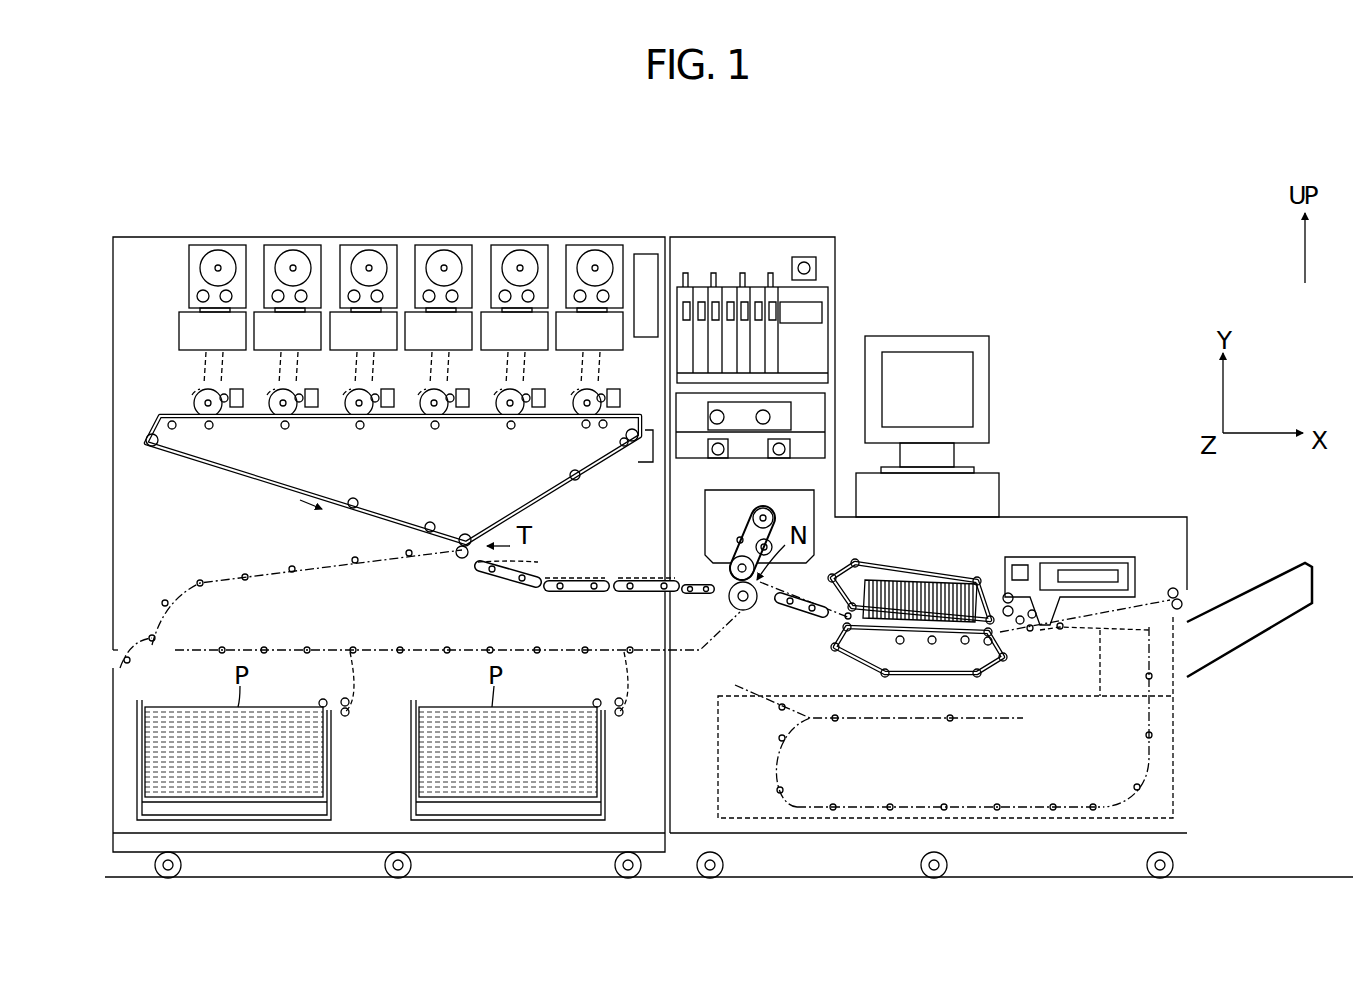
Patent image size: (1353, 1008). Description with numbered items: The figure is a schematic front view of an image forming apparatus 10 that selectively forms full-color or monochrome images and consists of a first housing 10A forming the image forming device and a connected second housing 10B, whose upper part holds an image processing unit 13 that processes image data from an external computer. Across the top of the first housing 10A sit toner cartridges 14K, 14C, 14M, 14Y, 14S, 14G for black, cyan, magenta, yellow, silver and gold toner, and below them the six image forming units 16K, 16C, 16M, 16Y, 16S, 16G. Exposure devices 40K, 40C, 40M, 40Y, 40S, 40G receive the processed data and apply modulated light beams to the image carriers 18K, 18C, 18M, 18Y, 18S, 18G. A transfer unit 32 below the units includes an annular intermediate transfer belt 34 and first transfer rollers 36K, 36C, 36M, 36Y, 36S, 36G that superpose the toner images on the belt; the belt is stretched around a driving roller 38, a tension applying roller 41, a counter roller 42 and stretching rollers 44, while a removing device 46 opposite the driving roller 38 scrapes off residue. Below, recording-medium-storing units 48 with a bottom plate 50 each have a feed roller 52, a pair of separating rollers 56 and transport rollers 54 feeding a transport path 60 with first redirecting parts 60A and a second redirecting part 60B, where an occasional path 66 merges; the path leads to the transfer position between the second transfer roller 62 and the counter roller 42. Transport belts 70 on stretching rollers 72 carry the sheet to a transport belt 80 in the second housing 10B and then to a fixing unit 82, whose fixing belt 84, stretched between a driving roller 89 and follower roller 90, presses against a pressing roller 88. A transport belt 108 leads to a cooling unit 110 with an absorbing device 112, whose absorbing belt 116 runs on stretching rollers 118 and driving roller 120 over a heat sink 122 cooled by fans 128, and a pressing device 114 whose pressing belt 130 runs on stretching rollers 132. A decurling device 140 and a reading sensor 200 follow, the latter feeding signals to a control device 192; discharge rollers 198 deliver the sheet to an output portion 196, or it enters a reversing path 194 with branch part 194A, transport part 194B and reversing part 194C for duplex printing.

The image forming apparatus 10 is at (1097, 167).
The first housing 10A is at (148, 237).
The second housing 10B is at (832, 237).
The image processing unit 13 is at (828, 300).
The toner cartridge 14K is at (212, 245).
The toner cartridge 14C is at (287, 245).
The toner cartridge 14M is at (363, 245).
The toner cartridge 14Y is at (438, 245).
The toner cartridge 14S is at (514, 245).
The toner cartridge 14G is at (589, 245).
The image forming unit 16K is at (212, 346).
The image forming unit 16C is at (287, 346).
The image forming unit 16M is at (363, 346).
The image forming unit 16Y is at (438, 346).
The image forming unit 16S is at (514, 346).
The image forming unit 16G is at (604, 354).
The image carrier 18K is at (216, 414).
The image carrier 18C is at (291, 414).
The image carrier 18M is at (367, 414).
The image carrier 18Y is at (442, 414).
The image carrier 18S is at (518, 414).
The image carrier 18G is at (595, 414).
The transfer unit 32 is at (133, 420).
The intermediate transfer belt 34 is at (238, 474).
The first transfer roller 36K is at (212, 429).
The first transfer roller 36C is at (287, 429).
The first transfer roller 36M is at (358, 429).
The first transfer roller 36Y is at (433, 429).
The first transfer roller 36S is at (509, 429).
The first transfer roller 36G is at (582, 428).
The driving roller 38 is at (636, 432).
The exposure device 40K is at (186, 352).
The exposure device 40C is at (262, 352).
The exposure device 40M is at (338, 352).
The exposure device 40Y is at (413, 352).
The exposure device 40S is at (489, 352).
The exposure device 40G is at (564, 352).
The tension applying roller 41 is at (152, 447).
The counter roller 42 is at (467, 533).
The stretching rollers 44 is at (356, 500).
The removing device 46 is at (636, 462).
The recording-medium-storing unit 48 is at (340, 760).
The bottom plate 50 is at (320, 800).
The feed roller 52 is at (323, 699).
The transport rollers 54 is at (288, 567).
The separating rollers 56 is at (349, 712).
The transport path 60 is at (350, 645).
The first redirecting part 60A is at (362, 700).
The second redirecting part 60B is at (155, 645).
The second transfer roller 62 is at (458, 555).
The occasional path 66 is at (128, 655).
The transport belts 70 is at (482, 584).
The stretching rollers 72 is at (545, 578).
The transport belt 80 is at (682, 593).
The fixing unit 82 is at (700, 500).
The fixing belt 84 is at (740, 512).
The pressing roller 88 is at (729, 597).
The driving roller 89 is at (742, 555).
The follower roller 90 is at (773, 512).
The transport belt 108 is at (748, 610).
The cooling unit 110 is at (940, 542).
The absorbing device 112 is at (872, 563).
The pressing device 114 is at (792, 632).
The absorbing belt 116 is at (858, 556).
The stretching rollers 118 is at (850, 570).
The driving roller 120 is at (984, 594).
The heat sink 122 is at (903, 578).
The fans 128 is at (815, 608).
The pressing belt 130 is at (838, 652).
The stretching rollers 132 is at (904, 642).
The decurling device 140 is at (1045, 647).
The control device 192 is at (646, 254).
The reversing path 194 is at (1157, 778).
The branch part 194A is at (1147, 712).
The transport part 194B is at (972, 806).
The reversing part 194C is at (890, 720).
The output portion 196 is at (1252, 641).
The discharge rollers 198 is at (1183, 604).
The reading sensor 200 is at (1107, 545).